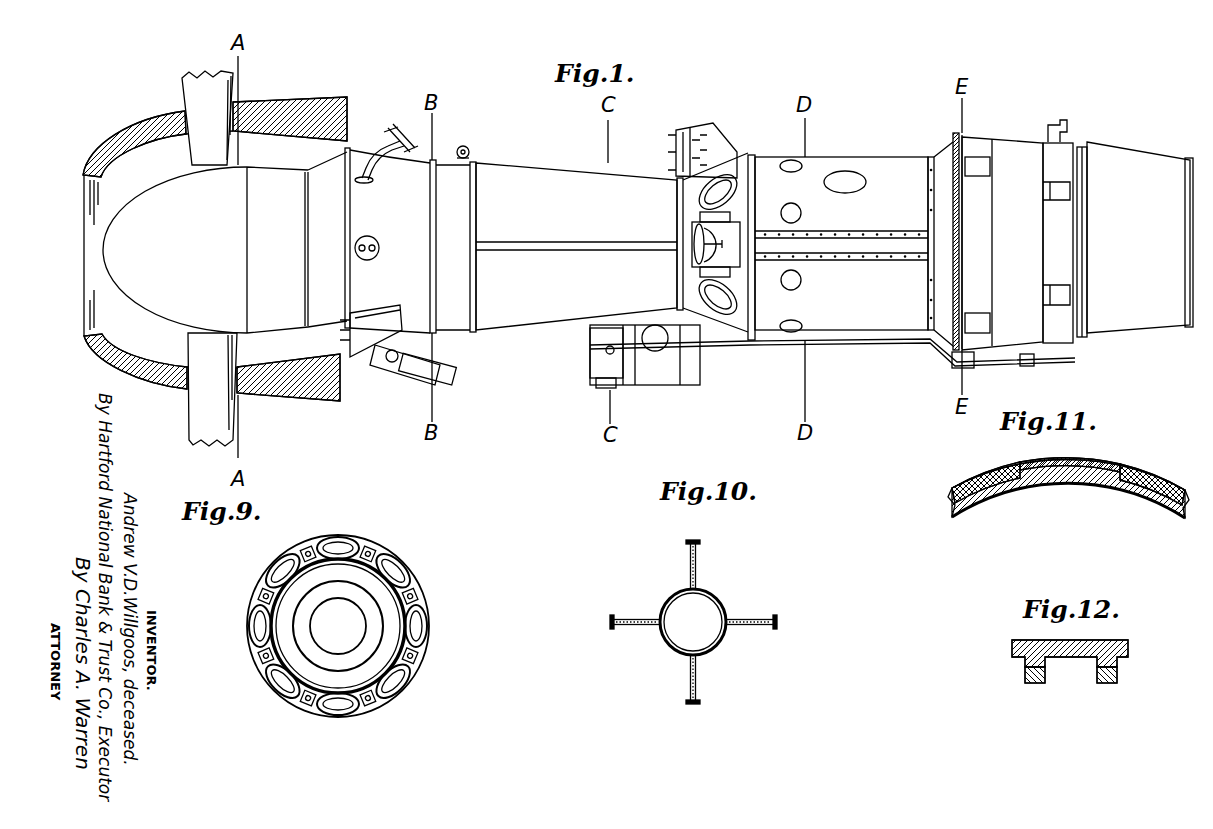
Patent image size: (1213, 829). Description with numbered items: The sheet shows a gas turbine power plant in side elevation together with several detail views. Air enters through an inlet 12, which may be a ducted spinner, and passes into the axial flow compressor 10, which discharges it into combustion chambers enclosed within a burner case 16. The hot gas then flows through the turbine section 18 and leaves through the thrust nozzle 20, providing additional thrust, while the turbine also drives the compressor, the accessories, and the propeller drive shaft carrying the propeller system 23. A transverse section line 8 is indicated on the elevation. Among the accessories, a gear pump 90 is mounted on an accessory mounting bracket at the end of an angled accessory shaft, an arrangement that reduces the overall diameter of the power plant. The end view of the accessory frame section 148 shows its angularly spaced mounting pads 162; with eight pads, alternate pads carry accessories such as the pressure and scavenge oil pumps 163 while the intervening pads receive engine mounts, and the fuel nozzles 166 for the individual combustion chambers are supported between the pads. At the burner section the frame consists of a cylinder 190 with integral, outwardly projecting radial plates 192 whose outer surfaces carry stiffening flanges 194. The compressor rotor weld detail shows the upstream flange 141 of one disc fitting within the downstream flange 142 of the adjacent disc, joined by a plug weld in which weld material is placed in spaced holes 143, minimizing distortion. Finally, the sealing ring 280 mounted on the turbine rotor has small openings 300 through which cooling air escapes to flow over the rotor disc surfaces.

In FIG. 1, the propeller system 23 is at (233, 86).
In FIG. 1, the inlet 12 is at (315, 168).
In FIG. 1, the axial flow compressor 10 is at (553, 187).
In FIG. 1, the section line 8— 8 is at (752, 157).
In FIG. 1, the burner case 16 is at (856, 166).
In FIG. 1, the turbine section 18 is at (977, 149).
In FIG. 1, the thrust nozzle 20 is at (1116, 169).
In FIG. 1, the gear pump 90 is at (377, 370).
In FIG. 1, the pressure and scavenge oil pumps 163 is at (679, 363).
In FIG. 9, the frame section 148 is at (418, 598).
In FIG. 9, the mounting pads 162 is at (337, 537).
In FIG. 9, the fuel nozzles 166 is at (370, 552).
In FIG. 10, the cylinder 190 is at (717, 598).
In FIG. 10, the radial plates 192 is at (696, 570).
In FIG. 10, the flanges 194 is at (698, 540).
In FIG. 11, the upstream flange 141 is at (1040, 485).
In FIG. 11, the downstream flange 142 is at (1088, 456).
In FIG. 11, the holes 143 is at (1008, 463).
In FIG. 12, the sealing rings 280 is at (1130, 646).
In FIG. 12, the small openings 300 is at (1025, 671).